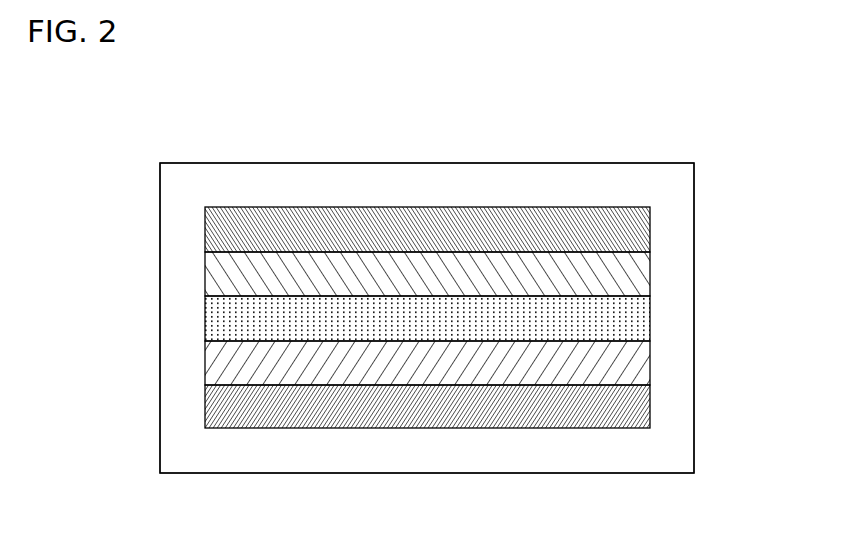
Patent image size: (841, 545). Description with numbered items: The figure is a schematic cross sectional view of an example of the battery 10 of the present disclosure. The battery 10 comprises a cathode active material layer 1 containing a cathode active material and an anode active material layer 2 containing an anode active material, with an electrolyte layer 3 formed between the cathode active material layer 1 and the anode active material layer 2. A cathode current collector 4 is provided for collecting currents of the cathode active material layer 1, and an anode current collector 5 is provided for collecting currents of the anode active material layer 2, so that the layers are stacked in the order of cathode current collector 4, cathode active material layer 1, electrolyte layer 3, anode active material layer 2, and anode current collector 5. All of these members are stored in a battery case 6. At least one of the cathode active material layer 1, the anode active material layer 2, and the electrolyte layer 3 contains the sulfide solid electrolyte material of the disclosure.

The battery 10 is at (679, 119).
The battery case 6 is at (670, 180).
The cathode current collector 4 is at (638, 220).
The cathode active material layer 1 is at (637, 267).
The electrolyte layer 3 is at (633, 312).
The anode active material layer 2 is at (637, 353).
The anode current collector 5 is at (637, 397).